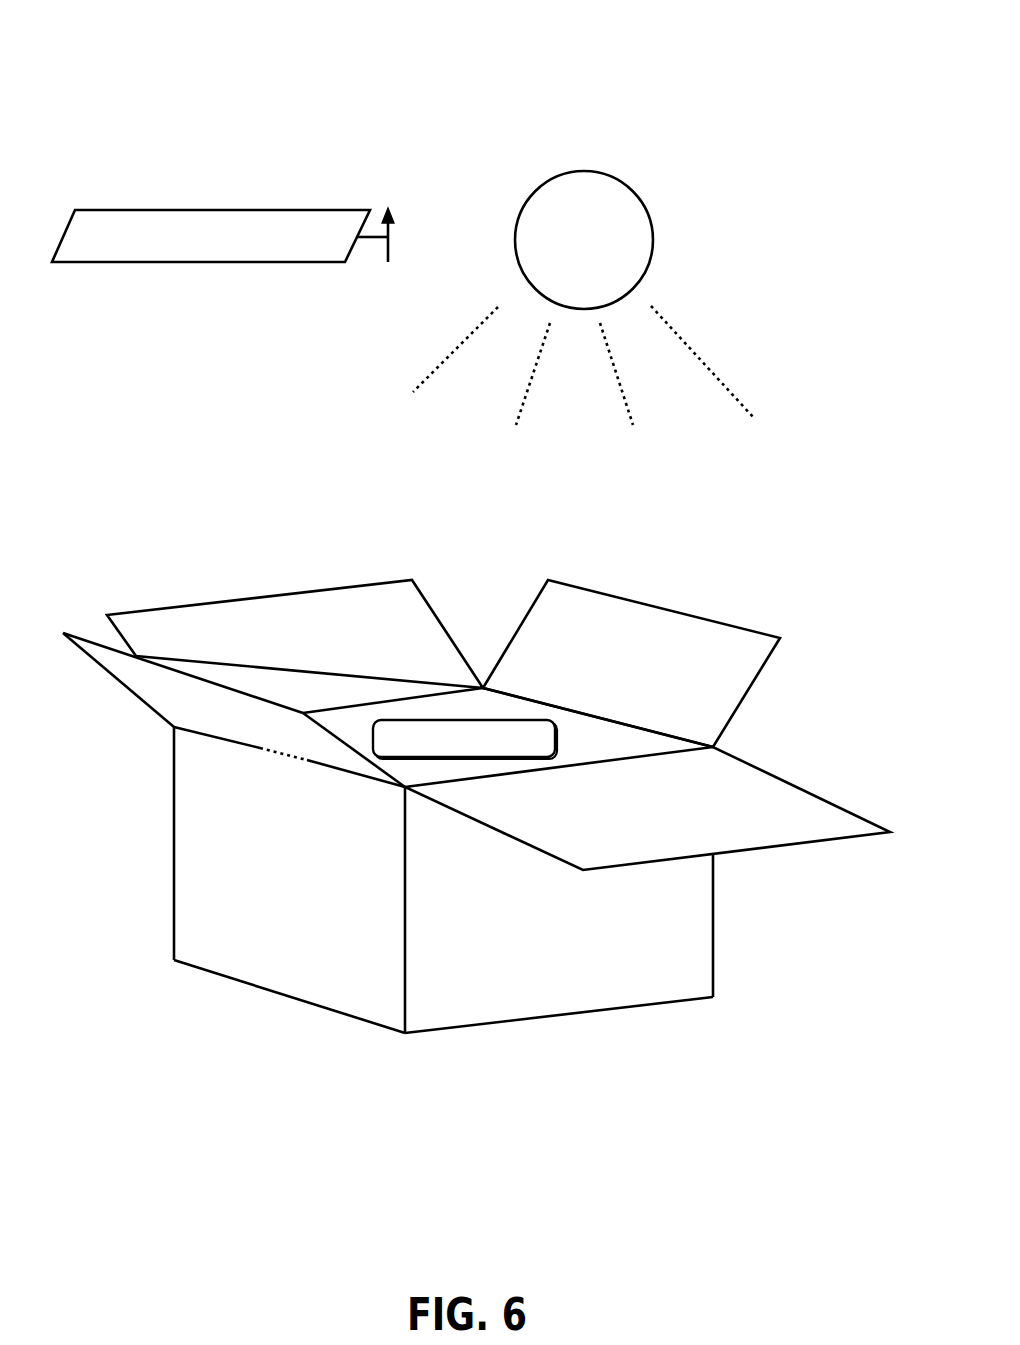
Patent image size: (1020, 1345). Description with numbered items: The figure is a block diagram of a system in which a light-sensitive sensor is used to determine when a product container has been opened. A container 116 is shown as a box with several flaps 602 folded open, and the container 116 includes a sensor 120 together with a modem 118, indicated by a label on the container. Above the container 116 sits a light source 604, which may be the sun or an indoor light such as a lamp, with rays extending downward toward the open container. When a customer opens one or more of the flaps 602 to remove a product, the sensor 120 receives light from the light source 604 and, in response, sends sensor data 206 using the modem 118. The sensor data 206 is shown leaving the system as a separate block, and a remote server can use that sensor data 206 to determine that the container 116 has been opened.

The sensor data 206 is at (300, 247).
The light source 604 is at (603, 278).
The flaps 602 is at (791, 1072).
The container 116 is at (403, 1035).
The modem 118 is at (465, 739).
The sensor 120 is at (530, 752).